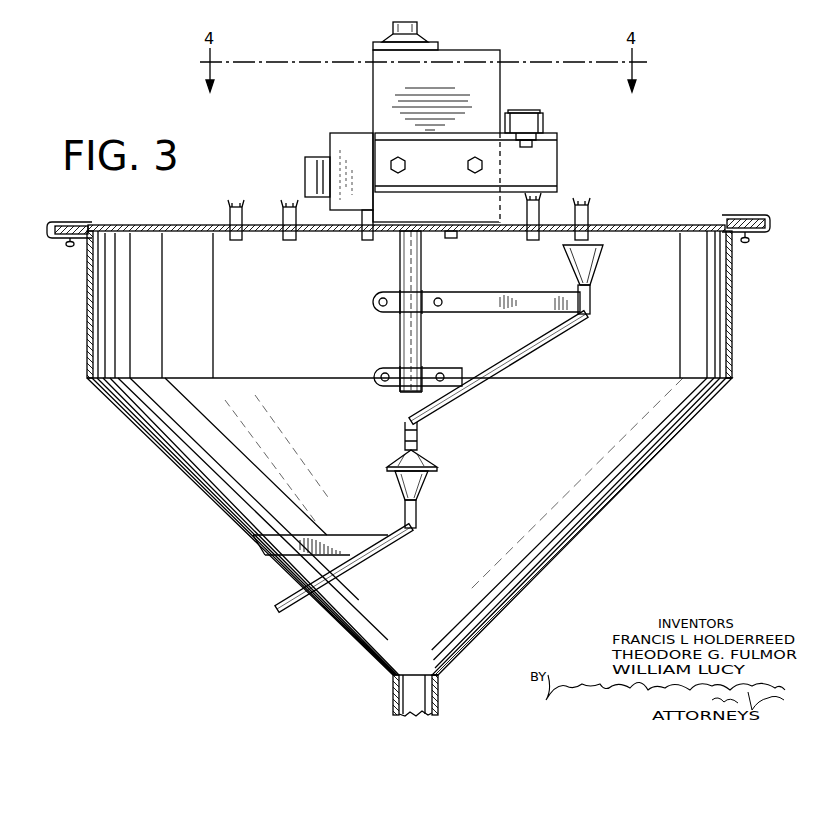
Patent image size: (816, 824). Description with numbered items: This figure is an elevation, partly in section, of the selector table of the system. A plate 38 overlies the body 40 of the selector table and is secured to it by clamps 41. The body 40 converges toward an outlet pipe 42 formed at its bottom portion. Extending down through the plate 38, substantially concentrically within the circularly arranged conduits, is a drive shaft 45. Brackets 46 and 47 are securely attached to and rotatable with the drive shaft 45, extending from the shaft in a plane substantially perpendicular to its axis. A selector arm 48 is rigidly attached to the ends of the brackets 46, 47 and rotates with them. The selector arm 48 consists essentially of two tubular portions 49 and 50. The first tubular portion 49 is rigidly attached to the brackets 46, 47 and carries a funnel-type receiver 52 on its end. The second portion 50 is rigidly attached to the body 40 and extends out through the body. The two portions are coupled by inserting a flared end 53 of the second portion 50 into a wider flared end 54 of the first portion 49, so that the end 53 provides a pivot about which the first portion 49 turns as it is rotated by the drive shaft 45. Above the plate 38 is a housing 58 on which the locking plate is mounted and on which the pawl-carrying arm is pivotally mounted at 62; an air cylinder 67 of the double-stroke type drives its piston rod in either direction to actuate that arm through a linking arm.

The plate 38 is at (671, 224).
The body 40 is at (733, 327).
The clamps 41 is at (50, 239).
The outlet pipe 42 is at (438, 690).
The drive shaft 45 is at (413, 23).
The bracket 46 is at (467, 300).
The bracket 47 is at (456, 372).
The selector arm 48 is at (602, 309).
The first tubular portion 49 is at (566, 323).
The second tubular portion 50 is at (418, 518).
The funnel-type receiver 52 is at (591, 263).
The flared end 53 is at (418, 491).
The wider flared end 54 is at (419, 460).
The housing 58 is at (554, 167).
The pivot 62 is at (529, 112).
The air cylinder 67 is at (330, 158).